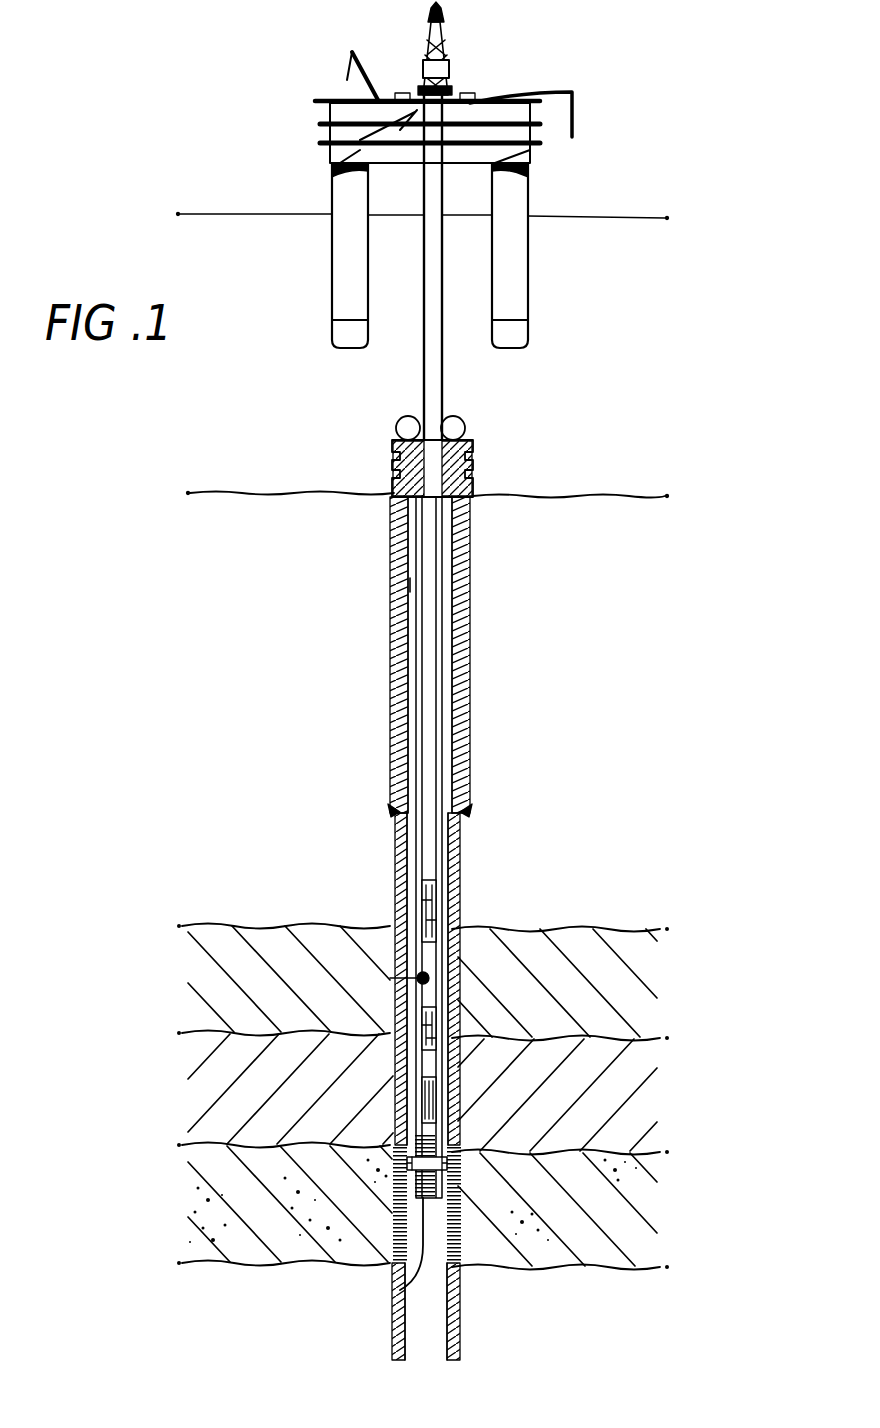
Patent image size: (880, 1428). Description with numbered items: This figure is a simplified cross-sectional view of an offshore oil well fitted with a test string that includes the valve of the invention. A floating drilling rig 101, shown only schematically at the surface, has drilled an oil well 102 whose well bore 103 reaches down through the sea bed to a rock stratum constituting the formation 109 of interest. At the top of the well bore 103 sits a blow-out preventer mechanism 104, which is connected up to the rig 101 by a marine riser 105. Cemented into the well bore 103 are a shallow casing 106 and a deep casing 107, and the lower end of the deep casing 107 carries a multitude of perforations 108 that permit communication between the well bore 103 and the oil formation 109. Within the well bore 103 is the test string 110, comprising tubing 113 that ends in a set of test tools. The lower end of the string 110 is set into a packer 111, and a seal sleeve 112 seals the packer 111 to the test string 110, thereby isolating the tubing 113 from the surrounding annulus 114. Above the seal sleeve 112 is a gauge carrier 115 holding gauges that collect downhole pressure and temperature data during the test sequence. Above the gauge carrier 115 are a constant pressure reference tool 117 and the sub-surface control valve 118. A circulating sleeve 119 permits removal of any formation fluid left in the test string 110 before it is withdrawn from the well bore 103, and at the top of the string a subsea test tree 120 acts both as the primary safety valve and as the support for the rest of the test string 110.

The floating drilling rig 101 is at (568, 158).
The oil well 102 is at (364, 664).
The well bore 103 is at (433, 1318).
The blow-out preventer mechanism 104 is at (470, 440).
The marine riser 105 is at (428, 362).
The shallow casing 106 is at (465, 657).
The deep casing 107 is at (455, 780).
The perforations 108 is at (397, 1217).
The formation 109 is at (645, 1196).
The test string 110 is at (445, 990).
The packer 111 is at (450, 1157).
The seal sleeve 112 is at (400, 1290).
The tubing 113 is at (428, 722).
The annulus 114 is at (413, 585).
The gauge carrier 115 is at (412, 1100).
The constant pressure reference tool 117 is at (450, 1015).
The sub-surface control valve 118 is at (395, 978).
The circulating sleeve 119 is at (437, 904).
The subsea test tree 120 is at (405, 458).